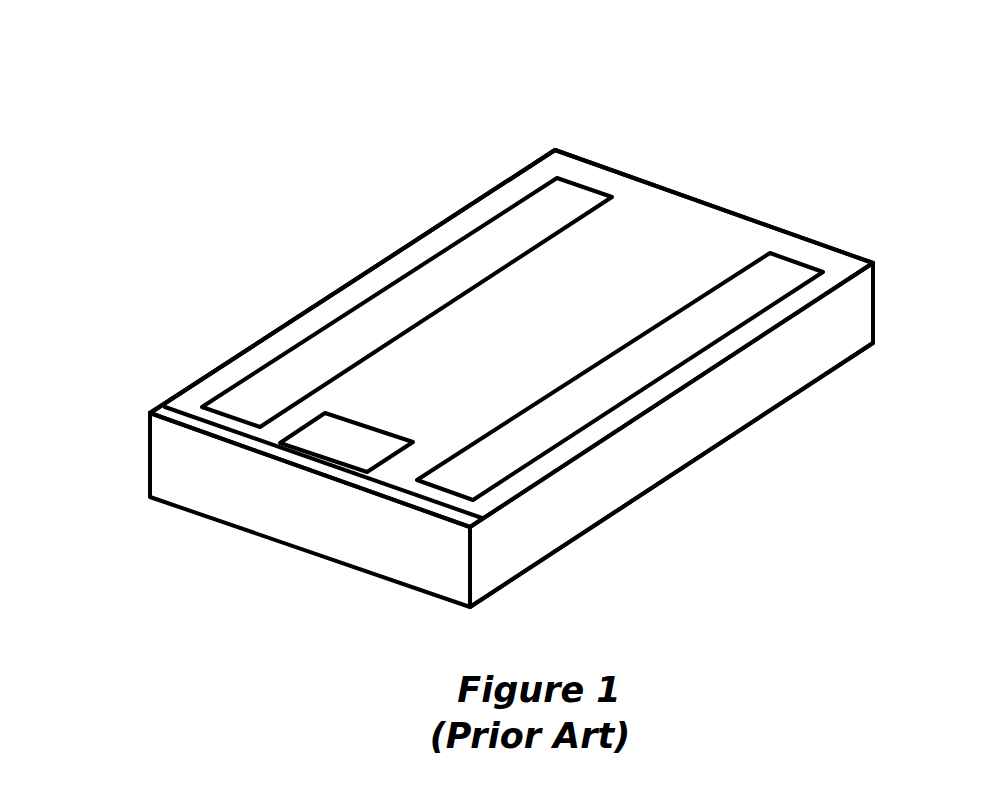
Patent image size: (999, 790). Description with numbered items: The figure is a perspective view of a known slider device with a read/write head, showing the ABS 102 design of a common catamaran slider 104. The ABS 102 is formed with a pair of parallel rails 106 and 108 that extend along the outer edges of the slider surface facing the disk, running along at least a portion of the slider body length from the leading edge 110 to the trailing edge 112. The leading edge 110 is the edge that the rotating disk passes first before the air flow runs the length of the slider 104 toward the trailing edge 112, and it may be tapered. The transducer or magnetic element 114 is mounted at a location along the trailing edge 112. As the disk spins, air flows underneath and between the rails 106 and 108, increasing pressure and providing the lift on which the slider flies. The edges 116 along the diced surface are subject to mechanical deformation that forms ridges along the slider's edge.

The ABS 102 is at (522, 317).
The catamaran slider 104 is at (553, 148).
The rail 106 is at (390, 328).
The rail 108 is at (758, 287).
The leading edge 110 is at (710, 203).
The trailing edge 112 is at (352, 492).
The transducer or magnetic element 114 is at (348, 448).
The edges 116 is at (290, 320).